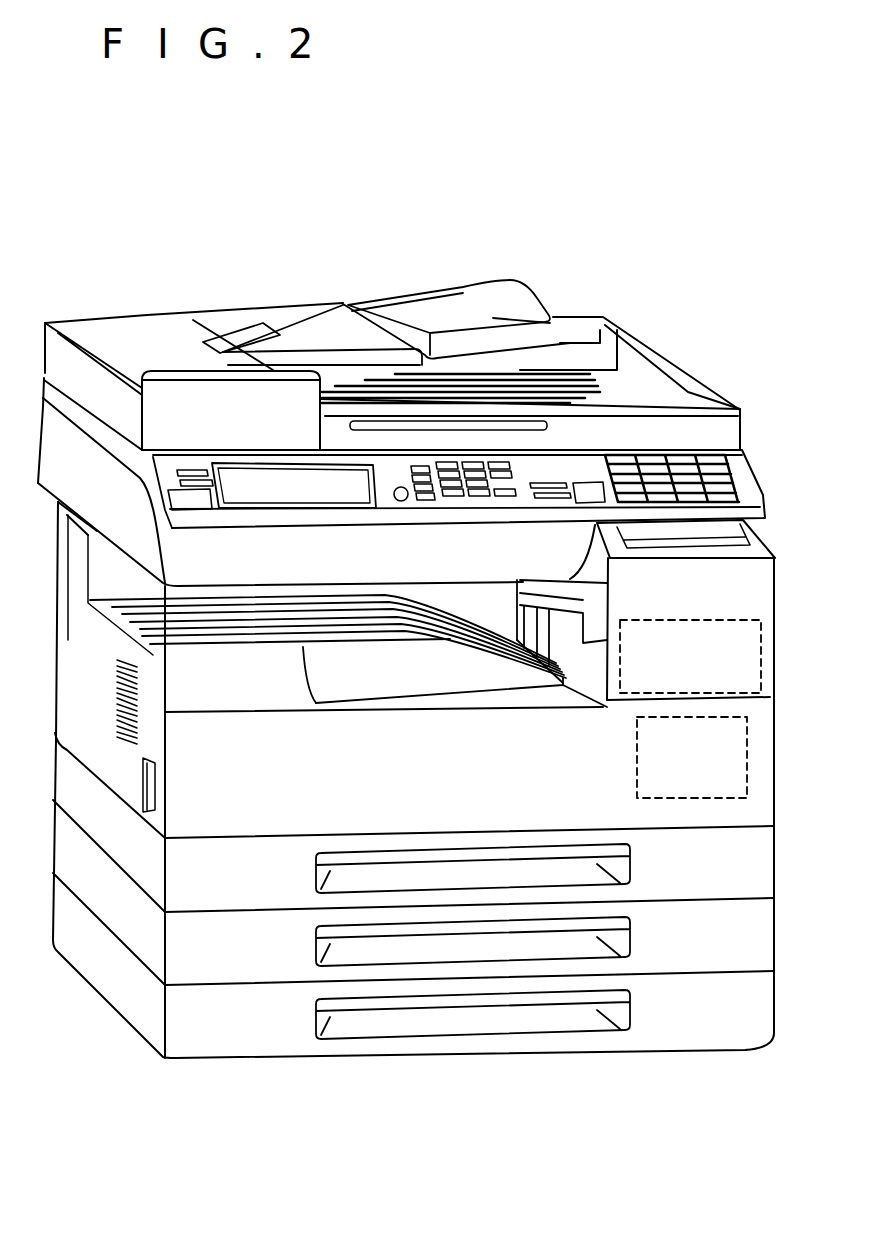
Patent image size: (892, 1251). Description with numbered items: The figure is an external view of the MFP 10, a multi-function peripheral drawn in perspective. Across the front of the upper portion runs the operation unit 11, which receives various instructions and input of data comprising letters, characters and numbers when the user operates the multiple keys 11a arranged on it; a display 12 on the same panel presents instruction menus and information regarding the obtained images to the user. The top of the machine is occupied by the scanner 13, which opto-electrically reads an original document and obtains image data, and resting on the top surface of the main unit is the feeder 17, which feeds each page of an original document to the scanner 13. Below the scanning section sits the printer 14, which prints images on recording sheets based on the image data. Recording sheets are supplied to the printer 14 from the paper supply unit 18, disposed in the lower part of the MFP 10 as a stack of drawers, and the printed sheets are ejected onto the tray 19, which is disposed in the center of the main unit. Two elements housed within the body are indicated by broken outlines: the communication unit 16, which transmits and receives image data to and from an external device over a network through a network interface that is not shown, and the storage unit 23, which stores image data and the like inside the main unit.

The MFP 10 is at (158, 204).
The operation unit 11 is at (545, 466).
The keys 11a is at (396, 499).
The display 12 is at (383, 492).
The scanner 13 is at (34, 372).
The printer 14 is at (782, 603).
The communication unit 16 is at (633, 757).
The feeder 17 is at (263, 345).
The paper supply unit 18 is at (132, 980).
The tray 19 is at (447, 643).
The storage unit 23 is at (694, 617).